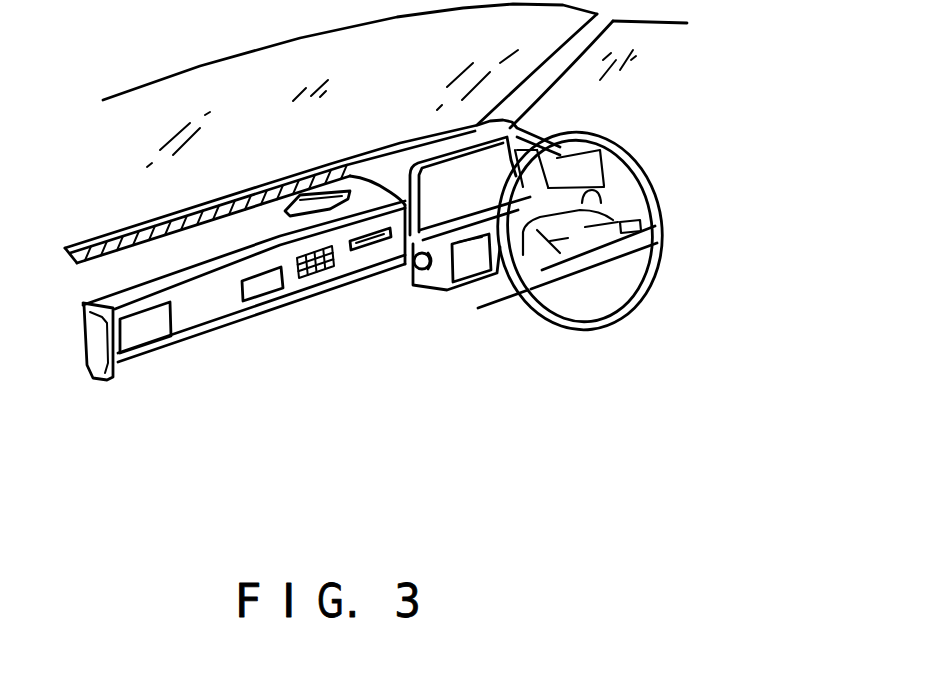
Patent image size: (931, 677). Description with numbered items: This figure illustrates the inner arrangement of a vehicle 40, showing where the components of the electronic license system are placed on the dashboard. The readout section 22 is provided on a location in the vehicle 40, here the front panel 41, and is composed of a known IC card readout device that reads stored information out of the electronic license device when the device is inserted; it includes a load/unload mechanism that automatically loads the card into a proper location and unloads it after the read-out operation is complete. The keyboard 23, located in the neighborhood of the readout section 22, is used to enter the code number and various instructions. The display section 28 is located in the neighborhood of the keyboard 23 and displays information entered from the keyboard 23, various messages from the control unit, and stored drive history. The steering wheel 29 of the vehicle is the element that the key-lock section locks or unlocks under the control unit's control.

The vehicle 40 is at (122, 163).
The front panel 41 is at (146, 331).
The display section 28 is at (264, 289).
The keyboard 23 is at (319, 273).
The readout section 22 is at (371, 240).
The steering wheel 29 is at (577, 323).